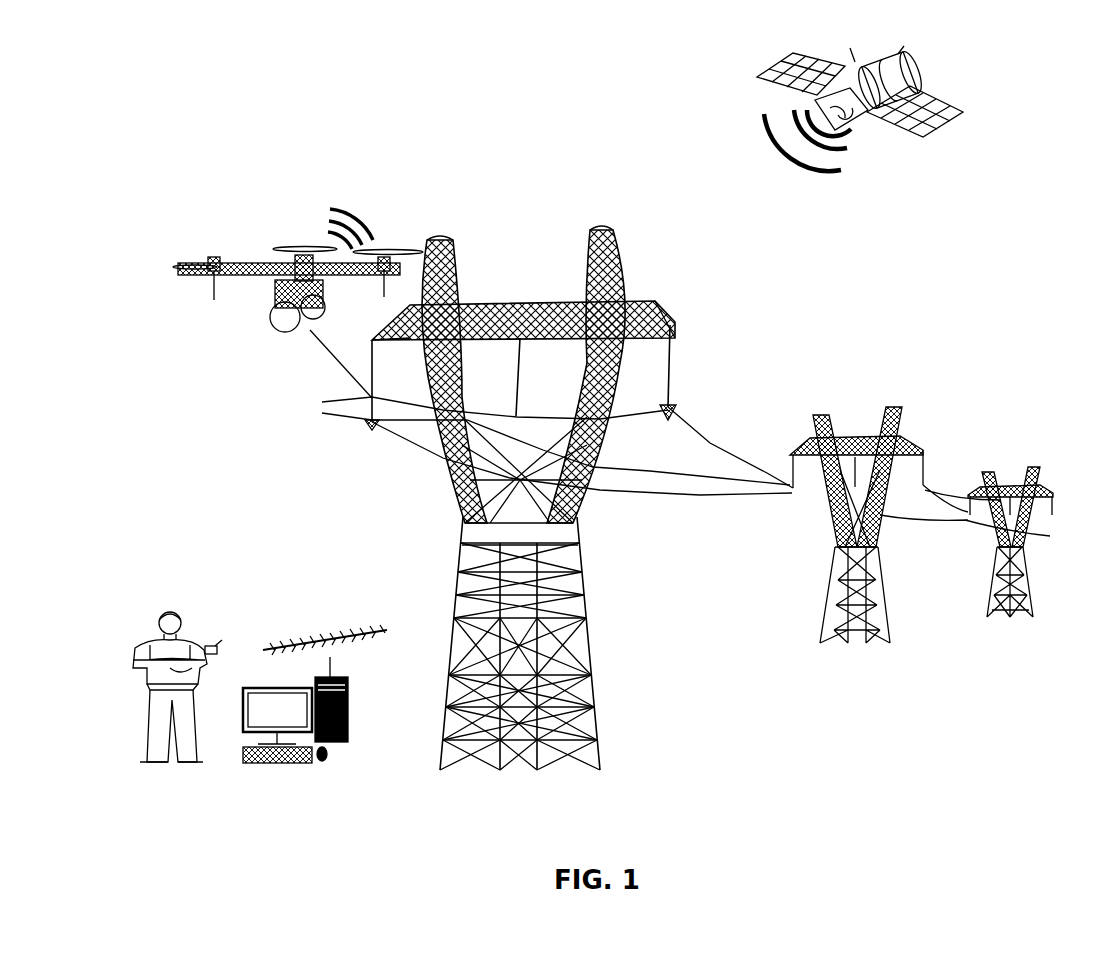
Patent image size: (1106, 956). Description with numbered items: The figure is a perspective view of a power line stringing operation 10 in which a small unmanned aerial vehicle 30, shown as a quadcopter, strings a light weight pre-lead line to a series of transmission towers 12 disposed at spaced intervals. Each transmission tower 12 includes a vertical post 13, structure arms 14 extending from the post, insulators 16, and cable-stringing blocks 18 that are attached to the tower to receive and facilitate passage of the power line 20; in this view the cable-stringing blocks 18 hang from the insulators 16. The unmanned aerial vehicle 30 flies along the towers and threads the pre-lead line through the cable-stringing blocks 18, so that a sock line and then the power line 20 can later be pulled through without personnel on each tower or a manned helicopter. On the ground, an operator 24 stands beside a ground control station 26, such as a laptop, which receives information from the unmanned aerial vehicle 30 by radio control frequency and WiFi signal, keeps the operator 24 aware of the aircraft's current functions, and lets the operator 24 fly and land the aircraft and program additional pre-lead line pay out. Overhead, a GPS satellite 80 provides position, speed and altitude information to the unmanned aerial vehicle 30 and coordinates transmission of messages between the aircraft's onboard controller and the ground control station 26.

The power line stringing operation 10 is at (466, 122).
The transmission tower 12 is at (722, 478).
The vertical post 13 is at (605, 657).
The structure arm 14 is at (675, 303).
The insulator 16 is at (680, 340).
The cable-stringing block 18 is at (677, 400).
The power line 20 is at (716, 442).
The operator 24 is at (126, 651).
The ground control station 26 is at (357, 722).
The unmanned aerial vehicle 30 is at (285, 235).
The GPS satellite 80 is at (755, 52).